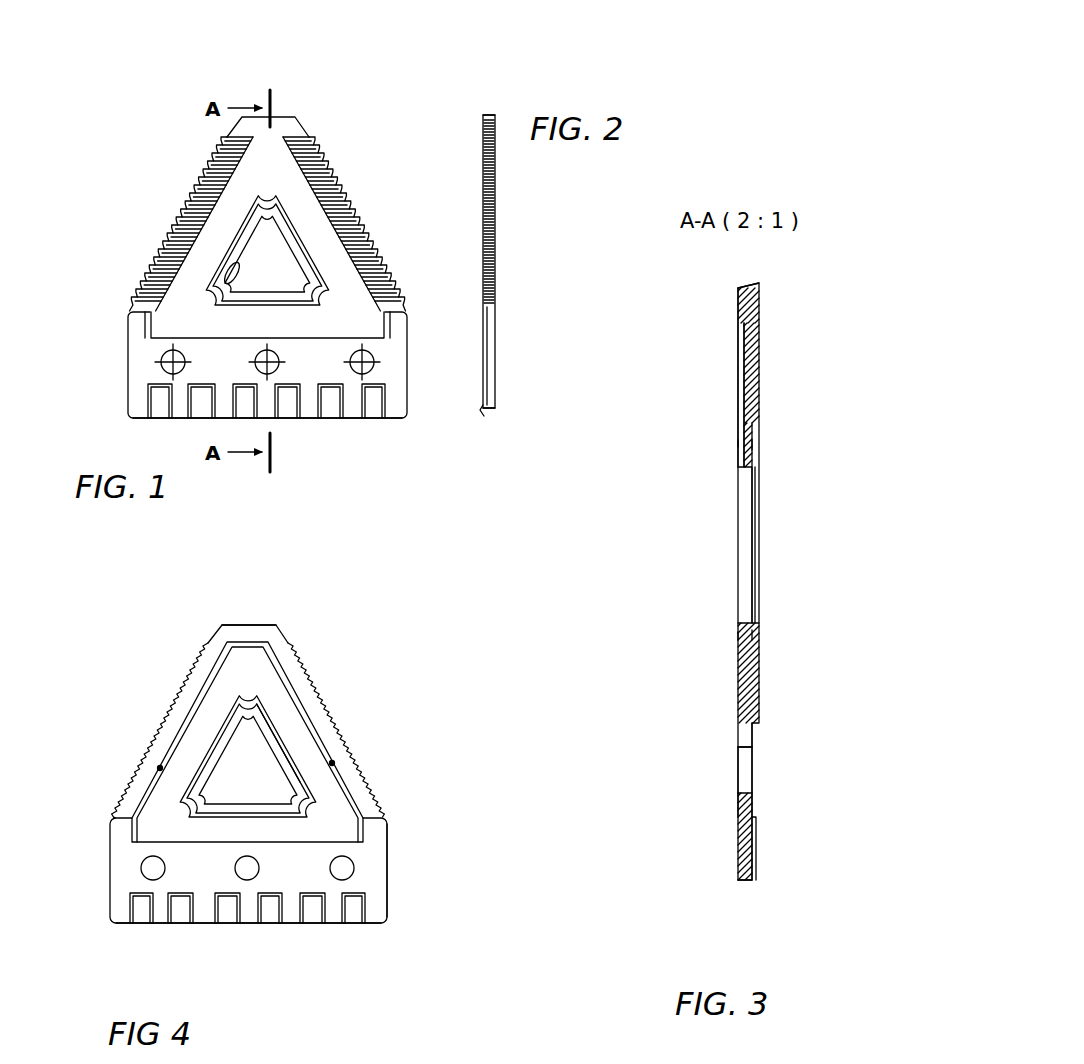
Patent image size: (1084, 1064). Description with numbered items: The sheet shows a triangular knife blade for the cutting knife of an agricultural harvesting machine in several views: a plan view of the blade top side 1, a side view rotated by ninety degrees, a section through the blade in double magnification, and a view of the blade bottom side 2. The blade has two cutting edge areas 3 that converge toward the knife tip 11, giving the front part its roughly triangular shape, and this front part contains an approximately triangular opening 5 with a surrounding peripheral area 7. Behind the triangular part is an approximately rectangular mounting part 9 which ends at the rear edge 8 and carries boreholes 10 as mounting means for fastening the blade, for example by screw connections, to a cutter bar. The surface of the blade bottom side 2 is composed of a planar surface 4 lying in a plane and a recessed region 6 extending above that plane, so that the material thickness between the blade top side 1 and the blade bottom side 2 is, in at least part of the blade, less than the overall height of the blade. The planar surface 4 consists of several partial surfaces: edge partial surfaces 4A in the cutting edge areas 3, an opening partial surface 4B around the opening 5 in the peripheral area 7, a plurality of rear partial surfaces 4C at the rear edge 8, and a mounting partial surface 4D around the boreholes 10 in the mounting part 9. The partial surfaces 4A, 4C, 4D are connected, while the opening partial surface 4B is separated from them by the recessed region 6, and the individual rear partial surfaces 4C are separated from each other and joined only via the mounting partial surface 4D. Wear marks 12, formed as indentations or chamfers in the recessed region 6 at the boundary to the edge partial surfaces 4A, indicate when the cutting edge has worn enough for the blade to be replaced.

In FIG. 1, the blade top side 1 is at (293, 98).
In FIG. 2, the blade top side 1 is at (513, 207).
In FIG. 3, the blade top side 1 is at (803, 402).
In FIG. 2, the blade bottom side 2 is at (468, 207).
In FIG. 3, the blade bottom side 2 is at (658, 770).
In FIG. 4, the blade bottom side 2 is at (323, 615).
In FIG. 1, the cutting edge areas 3 is at (197, 197).
In FIG. 4, the cutting edge areas 3 is at (304, 691).
In FIG. 3, the planar surface 4 is at (681, 591).
In FIG. 4, the planar surface 4 is at (304, 788).
In FIG. 3, the edge partial surface 4A is at (736, 302).
In FIG. 4, the edge partial surface 4A is at (188, 693).
In FIG. 3, the opening partial surface 4B is at (736, 443).
In FIG. 4, the opening partial surface 4B is at (252, 702).
In FIG. 3, the rear partial surfaces 4C is at (736, 862).
In FIG. 4, the rear partial surfaces 4C is at (360, 926).
In FIG. 3, the mounting partial surface 4D is at (736, 800).
In FIG. 4, the mounting partial surface 4D is at (368, 867).
In FIG. 1, the opening 5 is at (283, 278).
In FIG. 3, the opening 5 is at (748, 546).
In FIG. 4, the opening 5 is at (262, 781).
In FIG. 3, the recessed region 6 is at (736, 364).
In FIG. 4, the recessed region 6 is at (337, 803).
In FIG. 1, the peripheral area 7 is at (231, 283).
In FIG. 3, the peripheral area 7 is at (754, 445).
In FIG. 4, the peripheral area 7 is at (278, 748).
In FIG. 1, the rear edge 8 is at (352, 420).
In FIG. 2, the rear edge 8 is at (485, 412).
In FIG. 3, the rear edge 8 is at (738, 885).
In FIG. 1, the mounting part 9 is at (326, 378).
In FIG. 3, the mounting part 9 is at (783, 730).
In FIG. 4, the mounting part 9 is at (305, 883).
In FIG. 1, the boreholes 10 is at (160, 363).
In FIG. 3, the boreholes 10 is at (737, 757).
In FIG. 4, the boreholes 10 is at (150, 866).
In FIG. 1, the knife tip 11 is at (274, 116).
In FIG. 2, the knife tip 11 is at (491, 113).
In FIG. 3, the knife tip 11 is at (761, 297).
In FIG. 4, the knife tip 11 is at (243, 628).
In FIG. 4, the wear marks 12 is at (158, 767).